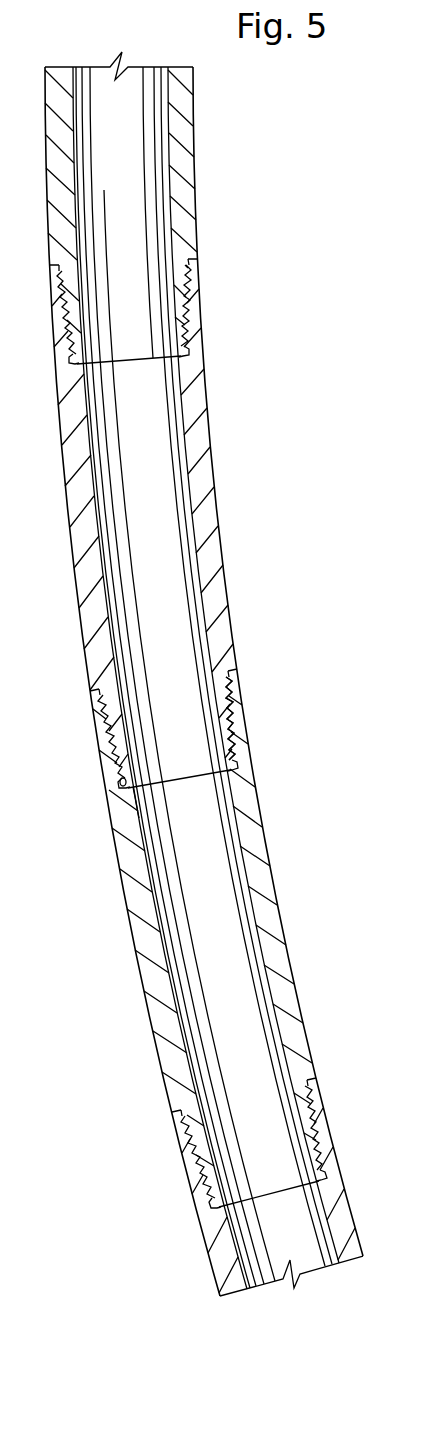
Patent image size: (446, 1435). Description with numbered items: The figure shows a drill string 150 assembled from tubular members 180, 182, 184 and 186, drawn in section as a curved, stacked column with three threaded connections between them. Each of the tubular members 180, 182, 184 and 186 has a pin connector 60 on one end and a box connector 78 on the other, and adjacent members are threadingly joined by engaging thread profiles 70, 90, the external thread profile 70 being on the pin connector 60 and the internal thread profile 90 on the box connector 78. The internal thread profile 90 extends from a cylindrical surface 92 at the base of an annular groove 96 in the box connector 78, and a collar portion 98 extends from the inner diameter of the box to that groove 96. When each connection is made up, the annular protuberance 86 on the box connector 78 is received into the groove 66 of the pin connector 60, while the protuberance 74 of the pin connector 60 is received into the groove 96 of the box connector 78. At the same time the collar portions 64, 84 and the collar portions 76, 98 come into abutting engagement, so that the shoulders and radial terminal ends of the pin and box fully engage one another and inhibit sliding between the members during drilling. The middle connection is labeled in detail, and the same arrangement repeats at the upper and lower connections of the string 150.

The pin connector 60 is at (193, 703).
The collar portion 64 is at (277, 706).
The groove 66 is at (84, 762).
The thread profile 70 is at (237, 691).
The protuberance 74 is at (129, 790).
The collar portion 76 is at (132, 806).
The box connector 78 is at (194, 744).
The collar portion 84 is at (231, 662).
The annular protuberance 86 is at (97, 688).
The internal thread profile 90 is at (230, 709).
The cylindrical surface 92 is at (225, 768).
The annular groove 96 is at (126, 784).
The collar portion 98 is at (117, 768).
The drill string 150 is at (290, 512).
The tubular member 180 is at (192, 152).
The tubular member 182 is at (207, 423).
The tubular member 184 is at (285, 938).
The tubular member 186 is at (350, 1203).